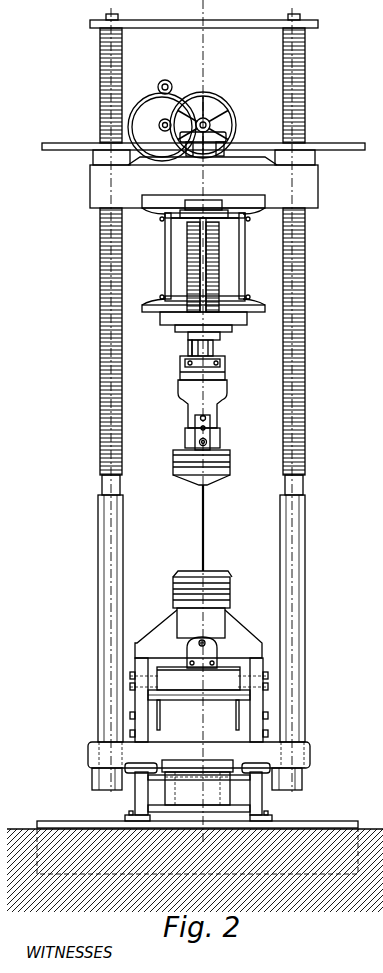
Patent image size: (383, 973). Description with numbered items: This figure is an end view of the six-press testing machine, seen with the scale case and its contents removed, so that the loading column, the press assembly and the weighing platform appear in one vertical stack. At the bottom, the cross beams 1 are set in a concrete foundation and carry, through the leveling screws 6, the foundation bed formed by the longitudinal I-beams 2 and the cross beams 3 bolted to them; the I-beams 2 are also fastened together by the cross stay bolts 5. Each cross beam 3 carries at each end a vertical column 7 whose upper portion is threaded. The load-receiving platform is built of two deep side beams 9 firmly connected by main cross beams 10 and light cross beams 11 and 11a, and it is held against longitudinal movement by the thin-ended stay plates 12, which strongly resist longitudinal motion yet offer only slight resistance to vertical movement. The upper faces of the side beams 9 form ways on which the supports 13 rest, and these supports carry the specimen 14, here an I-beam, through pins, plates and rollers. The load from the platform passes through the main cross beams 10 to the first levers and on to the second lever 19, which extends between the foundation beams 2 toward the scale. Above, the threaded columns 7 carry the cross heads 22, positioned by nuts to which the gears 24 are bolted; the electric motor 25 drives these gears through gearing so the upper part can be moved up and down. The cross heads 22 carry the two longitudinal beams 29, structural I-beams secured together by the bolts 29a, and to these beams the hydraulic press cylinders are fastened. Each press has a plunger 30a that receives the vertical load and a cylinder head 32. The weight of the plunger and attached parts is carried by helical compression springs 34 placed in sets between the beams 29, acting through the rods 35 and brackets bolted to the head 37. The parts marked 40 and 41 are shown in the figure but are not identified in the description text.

The cross beams 1 is at (324, 826).
The longitudinal I-beams 2 is at (137, 798).
The cross beams 3 is at (199, 763).
The cross stay bolts 5 is at (231, 812).
The leveling screws 6 is at (130, 814).
The vertical column 7 is at (98, 545).
The side beams 9 is at (199, 700).
The main cross beams 10 is at (198, 679).
The light cross beams 11 is at (170, 702).
The light cross beams 11a is at (218, 670).
The stay plates 12 is at (160, 703).
The supports 13 is at (198, 614).
The specimen 14 is at (199, 522).
The second lever 19 is at (197, 789).
The cross heads 22 is at (204, 186).
The gears 24 is at (63, 146).
The electric motor 25 is at (158, 91).
The longitudinal beams 29 is at (243, 270).
The bolts 29a is at (230, 224).
The plunger 30a is at (214, 346).
The cylinder head 32 is at (214, 202).
The helical compression springs 34 is at (186, 256).
The rods 35 is at (196, 348).
The head 37 is at (225, 371).
The link 40 is at (190, 408).
The link 41 is at (186, 437).